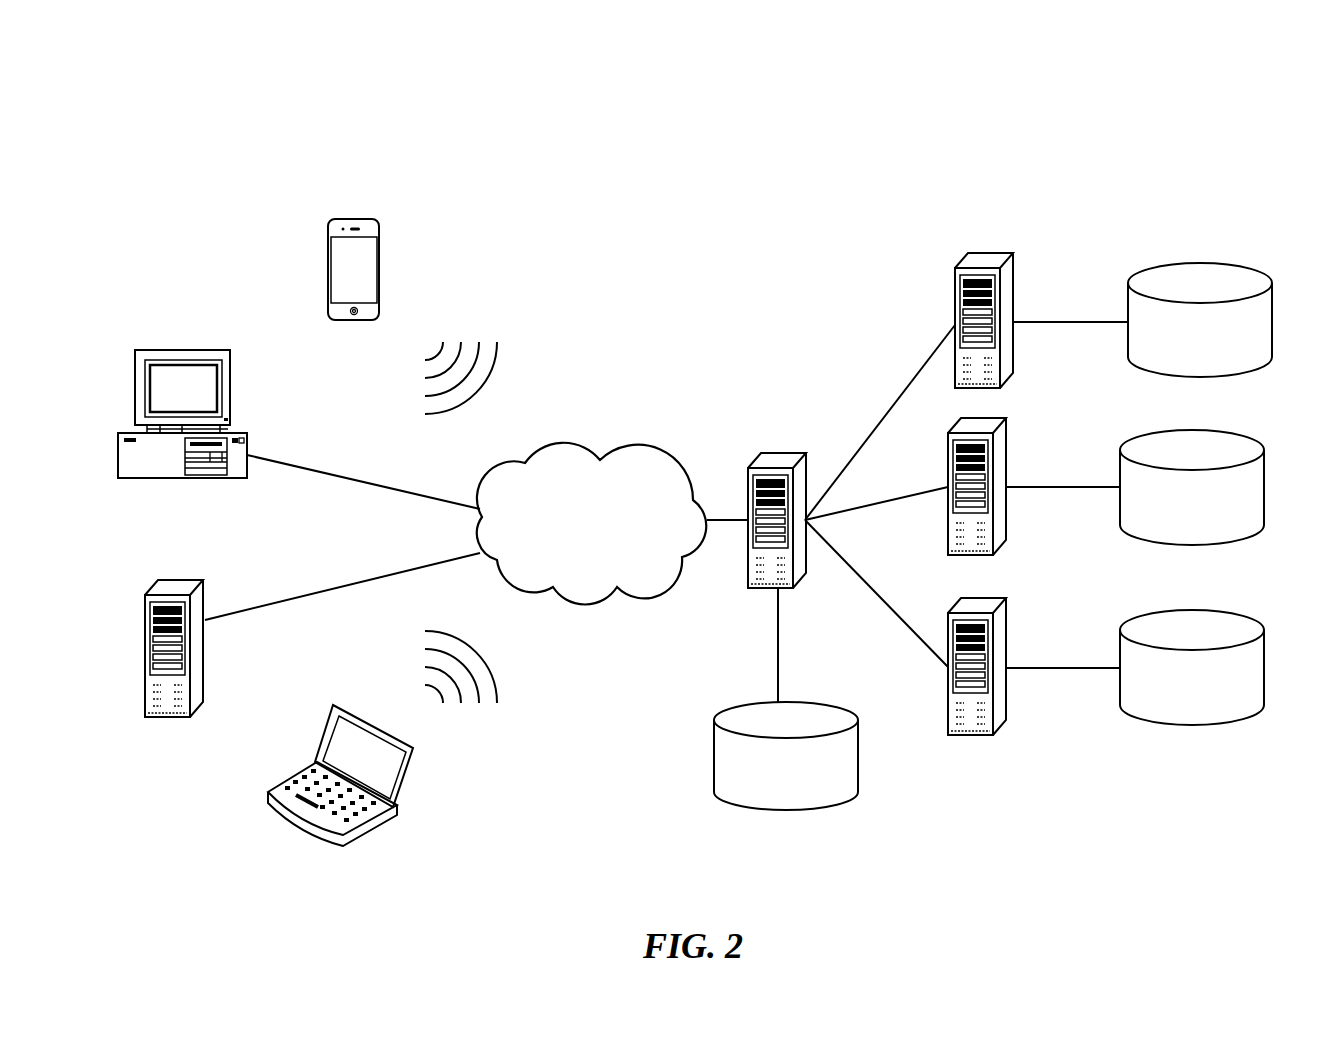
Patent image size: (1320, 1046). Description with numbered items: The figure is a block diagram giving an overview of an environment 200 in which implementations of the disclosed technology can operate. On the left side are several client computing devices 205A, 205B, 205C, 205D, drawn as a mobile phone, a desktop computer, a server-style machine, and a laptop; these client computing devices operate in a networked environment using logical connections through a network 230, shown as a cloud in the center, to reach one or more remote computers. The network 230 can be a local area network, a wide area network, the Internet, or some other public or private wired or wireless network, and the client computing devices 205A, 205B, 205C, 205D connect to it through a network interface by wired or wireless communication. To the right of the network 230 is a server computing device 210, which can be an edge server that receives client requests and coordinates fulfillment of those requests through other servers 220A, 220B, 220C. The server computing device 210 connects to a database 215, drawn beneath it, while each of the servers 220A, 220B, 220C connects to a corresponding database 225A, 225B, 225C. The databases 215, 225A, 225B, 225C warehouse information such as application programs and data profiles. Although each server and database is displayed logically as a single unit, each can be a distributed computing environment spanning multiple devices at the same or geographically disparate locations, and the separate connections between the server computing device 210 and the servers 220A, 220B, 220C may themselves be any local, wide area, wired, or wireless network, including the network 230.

The environment 200 is at (1072, 136).
The client computing device 205A is at (370, 221).
The client computing device 205B is at (230, 350).
The client computing device 205C is at (198, 574).
The client computing device 205D is at (410, 779).
The server computing device 210 is at (796, 454).
The database 215 is at (833, 702).
The server 220A is at (1015, 253).
The server 220B is at (1008, 419).
The server 220C is at (1008, 599).
The database 225A is at (1197, 264).
The database 225B is at (1190, 430).
The database 225C is at (1190, 610).
The network 230 is at (645, 443).